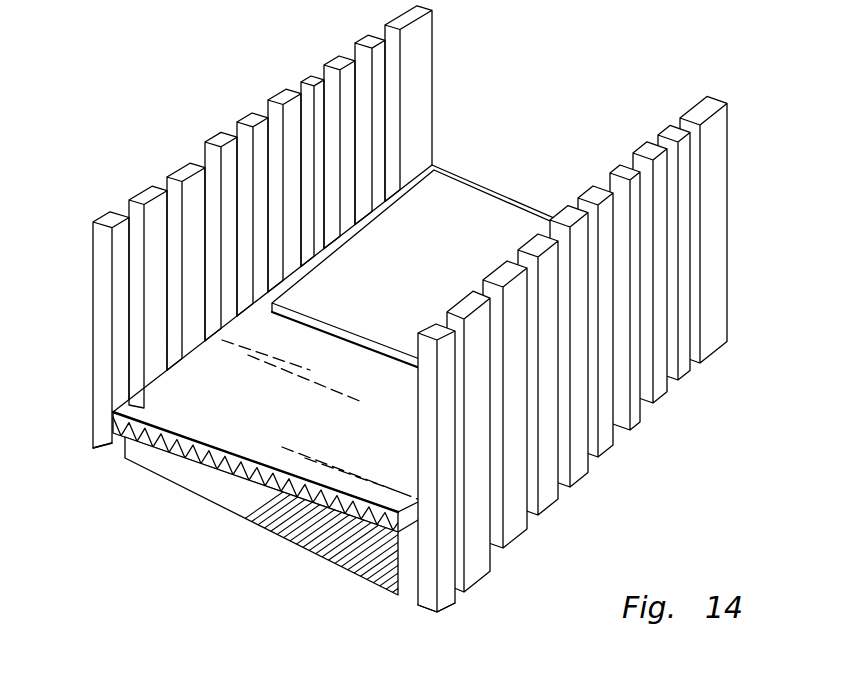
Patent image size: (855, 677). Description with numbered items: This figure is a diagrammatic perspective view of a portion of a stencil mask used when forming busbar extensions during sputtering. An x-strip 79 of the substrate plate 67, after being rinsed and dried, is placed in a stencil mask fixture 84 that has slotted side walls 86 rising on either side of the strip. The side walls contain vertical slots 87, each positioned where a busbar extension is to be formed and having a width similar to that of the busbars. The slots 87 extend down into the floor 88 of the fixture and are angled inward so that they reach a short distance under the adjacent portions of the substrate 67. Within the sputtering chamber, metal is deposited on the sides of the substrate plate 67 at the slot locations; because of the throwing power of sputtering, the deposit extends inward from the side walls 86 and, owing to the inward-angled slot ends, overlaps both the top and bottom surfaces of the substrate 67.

The x-strip 79 is at (500, 190).
The stencil mask fixture 84 is at (728, 197).
The slotted side walls 86 is at (712, 258).
The vertical slots 87 is at (93, 448).
The floor 88 is at (250, 517).
The substrate plate 67 is at (327, 533).